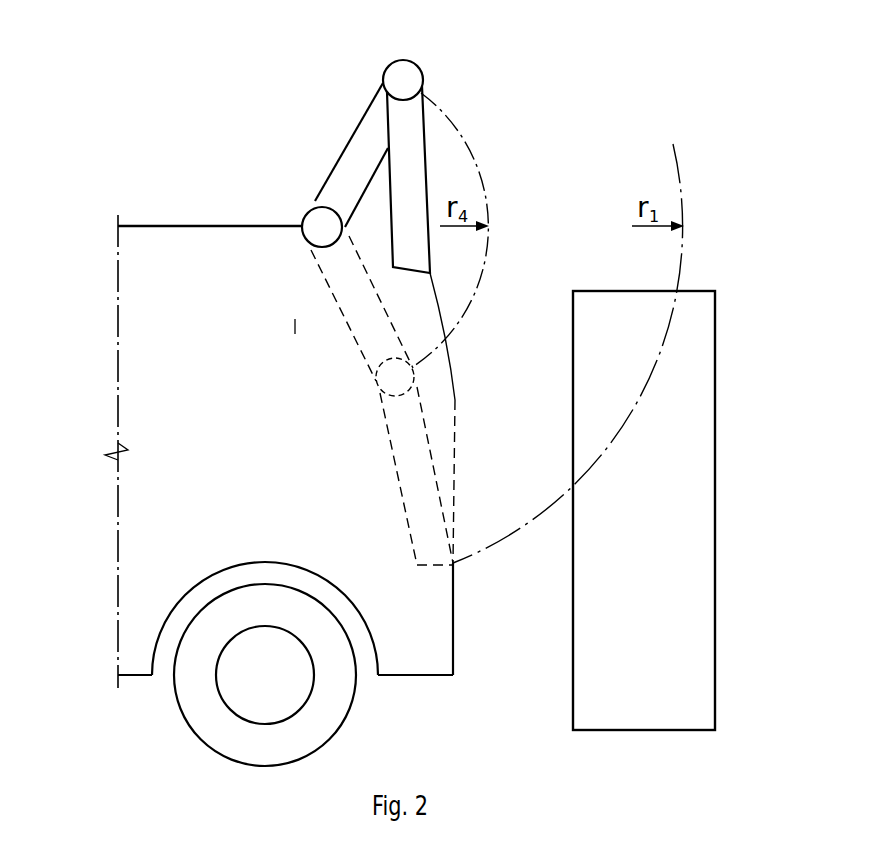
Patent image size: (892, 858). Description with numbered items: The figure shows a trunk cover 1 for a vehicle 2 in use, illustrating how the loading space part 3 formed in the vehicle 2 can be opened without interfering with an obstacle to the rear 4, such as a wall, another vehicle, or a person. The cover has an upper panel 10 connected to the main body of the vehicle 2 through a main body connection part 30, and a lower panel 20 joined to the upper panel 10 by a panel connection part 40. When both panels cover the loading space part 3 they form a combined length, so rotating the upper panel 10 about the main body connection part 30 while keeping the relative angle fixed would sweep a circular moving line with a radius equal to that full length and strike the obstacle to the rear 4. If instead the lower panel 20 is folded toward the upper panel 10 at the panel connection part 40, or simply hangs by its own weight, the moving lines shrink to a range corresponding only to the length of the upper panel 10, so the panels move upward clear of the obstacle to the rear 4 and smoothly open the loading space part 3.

The trunk cover 1 is at (410, 292).
The vehicle 2 is at (147, 225).
The loading space part 3 is at (293, 326).
The obstacle to the rear 4 is at (700, 493).
The upper panel 10 is at (356, 150).
The lower panel 20 is at (412, 190).
The main body connection part 30 is at (320, 217).
The panel connection part 40 is at (408, 77).